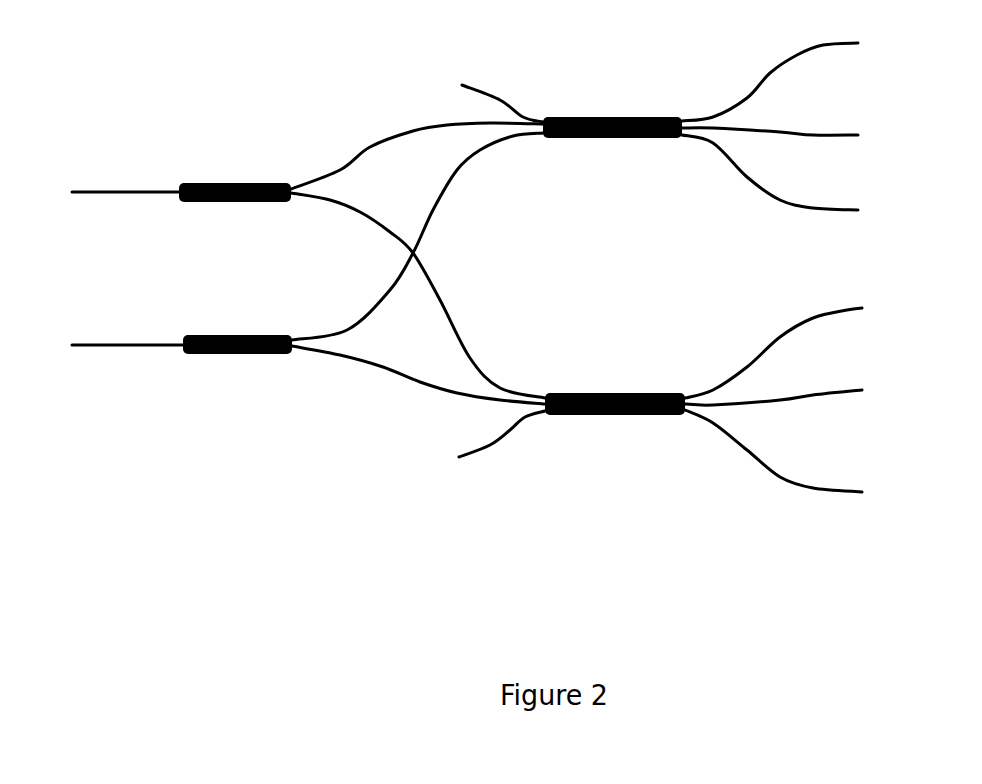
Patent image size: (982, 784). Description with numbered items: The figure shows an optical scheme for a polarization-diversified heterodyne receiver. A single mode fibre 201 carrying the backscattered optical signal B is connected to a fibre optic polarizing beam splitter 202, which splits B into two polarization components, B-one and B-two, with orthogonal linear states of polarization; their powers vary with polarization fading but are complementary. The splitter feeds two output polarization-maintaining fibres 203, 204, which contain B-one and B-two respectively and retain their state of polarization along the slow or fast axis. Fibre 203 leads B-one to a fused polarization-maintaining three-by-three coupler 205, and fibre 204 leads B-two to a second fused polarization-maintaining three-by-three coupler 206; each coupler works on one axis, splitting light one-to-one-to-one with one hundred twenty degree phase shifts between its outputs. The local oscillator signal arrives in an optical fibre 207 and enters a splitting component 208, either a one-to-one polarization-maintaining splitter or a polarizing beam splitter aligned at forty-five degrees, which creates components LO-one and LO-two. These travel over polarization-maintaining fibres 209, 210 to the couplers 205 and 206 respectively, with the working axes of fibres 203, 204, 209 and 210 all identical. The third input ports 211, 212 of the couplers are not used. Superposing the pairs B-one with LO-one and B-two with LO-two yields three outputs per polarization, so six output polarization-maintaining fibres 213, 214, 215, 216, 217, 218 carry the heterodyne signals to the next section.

The single mode fibre 201 is at (118, 188).
The fibre optic polarizing beam splitter 202 is at (240, 180).
The output polarization-maintaining fibre 203 is at (370, 147).
The output polarization-maintaining fibre 204 is at (360, 213).
The fused polarization-maintaining 3×3 coupler 205 is at (615, 112).
The fused polarization-maintaining 3×3 coupler 206 is at (615, 388).
The optical fibre 207 is at (120, 352).
The splitting component 208 is at (242, 360).
The polarization-maintaining fibre 209 is at (347, 328).
The polarization-maintaining fibre 210 is at (372, 370).
The third input port 211 is at (477, 82).
The third input port 212 is at (487, 453).
The output polarization-maintaining fibre 213 is at (843, 52).
The output polarization-maintaining fibre 214 is at (847, 142).
The output polarization-maintaining fibre 215 is at (848, 217).
The output polarization-maintaining fibre 216 is at (853, 315).
The output polarization-maintaining fibre 217 is at (853, 397).
The output polarization-maintaining fibre 218 is at (853, 498).